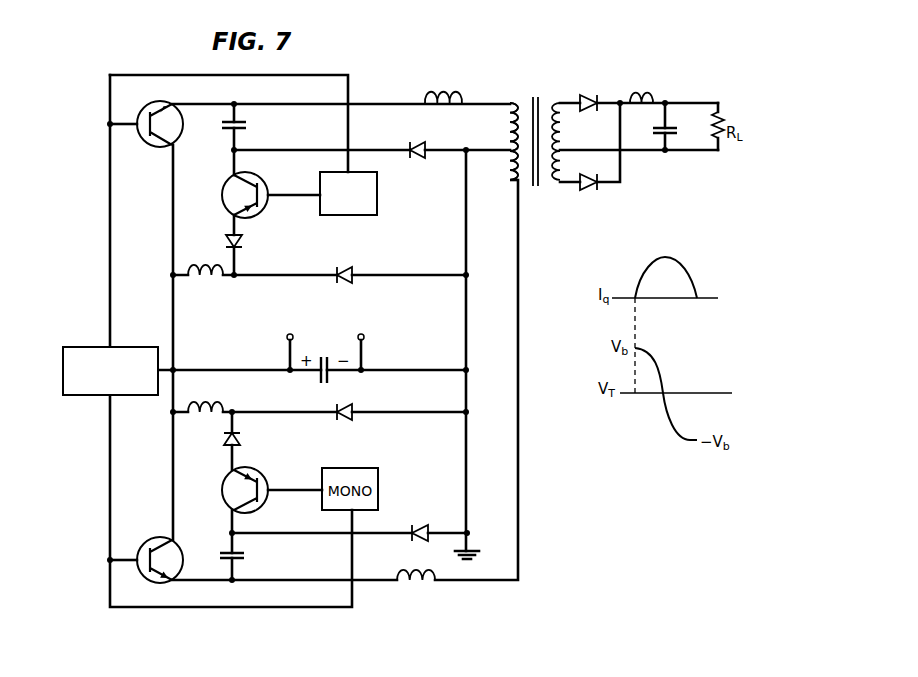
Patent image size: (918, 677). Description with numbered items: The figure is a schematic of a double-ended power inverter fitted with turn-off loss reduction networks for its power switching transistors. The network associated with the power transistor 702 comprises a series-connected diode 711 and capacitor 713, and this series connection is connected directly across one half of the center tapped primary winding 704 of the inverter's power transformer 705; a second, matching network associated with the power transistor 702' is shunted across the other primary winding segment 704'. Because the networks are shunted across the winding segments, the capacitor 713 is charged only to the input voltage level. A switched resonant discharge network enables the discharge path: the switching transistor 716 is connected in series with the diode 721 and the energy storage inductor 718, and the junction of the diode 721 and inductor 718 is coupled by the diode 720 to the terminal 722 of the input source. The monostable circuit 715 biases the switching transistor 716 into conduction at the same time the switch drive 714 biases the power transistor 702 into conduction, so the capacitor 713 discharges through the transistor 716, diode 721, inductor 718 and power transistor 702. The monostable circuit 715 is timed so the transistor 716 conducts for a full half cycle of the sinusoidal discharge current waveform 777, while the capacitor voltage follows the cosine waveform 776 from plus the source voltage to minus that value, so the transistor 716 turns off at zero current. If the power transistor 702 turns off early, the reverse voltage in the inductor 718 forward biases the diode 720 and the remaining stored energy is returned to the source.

The power transistor 702 is at (152, 131).
The power transistor 702' is at (156, 553).
The primary winding 704 is at (499, 122).
The primary winding 704' is at (497, 160).
The power transformer 705 is at (535, 133).
The diode 711 is at (422, 140).
The capacitor 713 is at (250, 128).
The switch drive 714 is at (77, 358).
The monostable circuit 715 is at (378, 199).
The switching transistor 716 is at (233, 195).
The inductor 718 is at (205, 286).
The diode 720 is at (348, 266).
The diode 721 is at (249, 244).
The terminal 722 is at (347, 349).
The voltage waveform 776 is at (661, 373).
The sinusoidal current waveform 777 is at (688, 270).